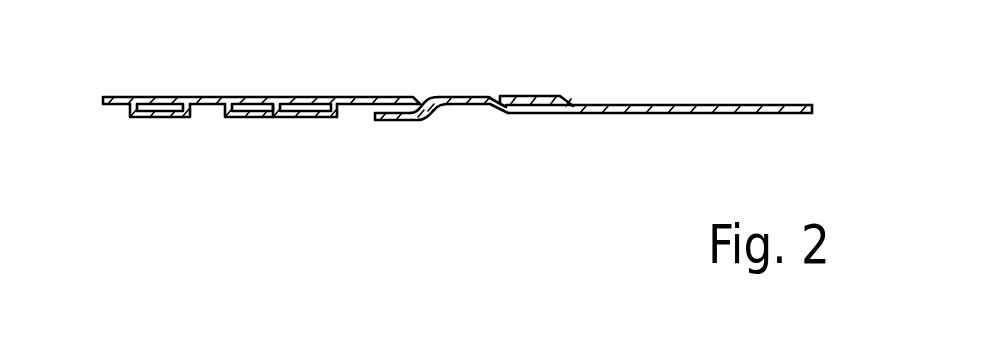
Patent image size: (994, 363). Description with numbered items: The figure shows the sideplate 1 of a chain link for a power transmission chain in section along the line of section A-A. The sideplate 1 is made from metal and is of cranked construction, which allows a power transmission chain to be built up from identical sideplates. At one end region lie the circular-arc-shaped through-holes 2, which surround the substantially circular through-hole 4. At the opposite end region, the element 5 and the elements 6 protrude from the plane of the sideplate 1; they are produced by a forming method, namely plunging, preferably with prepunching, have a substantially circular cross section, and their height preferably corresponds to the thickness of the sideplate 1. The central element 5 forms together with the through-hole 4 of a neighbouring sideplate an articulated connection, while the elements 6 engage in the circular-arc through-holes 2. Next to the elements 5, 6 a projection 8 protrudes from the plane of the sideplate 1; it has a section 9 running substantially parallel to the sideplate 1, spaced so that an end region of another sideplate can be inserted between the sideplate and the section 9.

The sideplate 1 is at (812, 105).
The through-holes 2 is at (565, 107).
The through-hole 4 is at (659, 105).
The element 5 is at (228, 118).
The elements 6 is at (135, 118).
The projection 8 is at (415, 124).
The section 9 is at (385, 122).